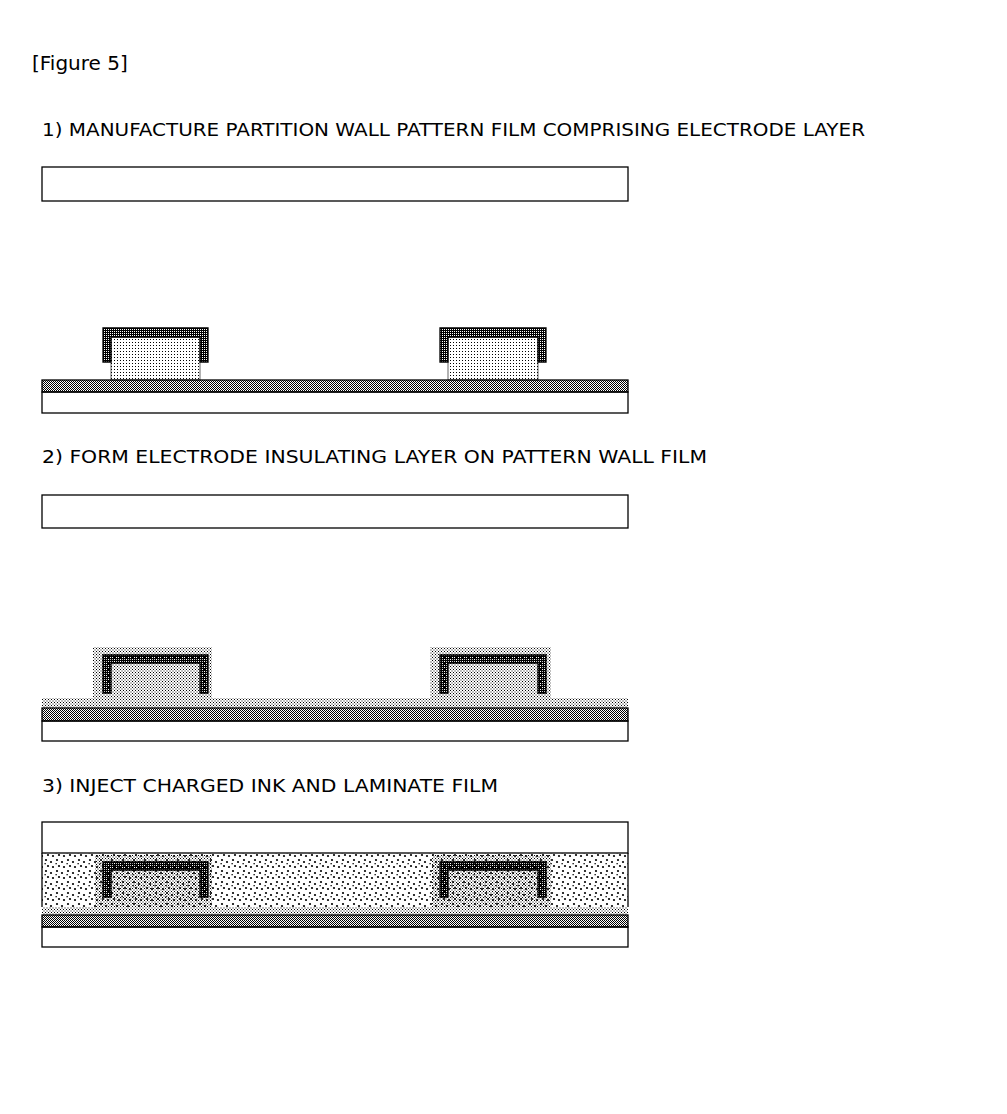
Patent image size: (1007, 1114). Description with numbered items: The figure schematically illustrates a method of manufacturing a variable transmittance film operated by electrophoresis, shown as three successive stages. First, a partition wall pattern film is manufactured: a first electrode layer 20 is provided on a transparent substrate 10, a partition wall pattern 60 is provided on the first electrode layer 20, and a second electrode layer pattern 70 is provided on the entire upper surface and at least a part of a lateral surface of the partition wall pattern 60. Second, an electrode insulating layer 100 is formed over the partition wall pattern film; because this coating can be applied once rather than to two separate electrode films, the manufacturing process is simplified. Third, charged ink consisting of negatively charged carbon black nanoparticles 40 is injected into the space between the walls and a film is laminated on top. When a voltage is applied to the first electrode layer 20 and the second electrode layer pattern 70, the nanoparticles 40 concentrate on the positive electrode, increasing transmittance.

The transparent substrate 10 is at (630, 183).
The first electrode layer 20 is at (630, 381).
The negatively charged carbon black nanoparticles 40 is at (348, 885).
The partition wall pattern 60 is at (180, 350).
The second electrode layer pattern 70 is at (525, 327).
The electrode insulating layer 100 is at (583, 700).